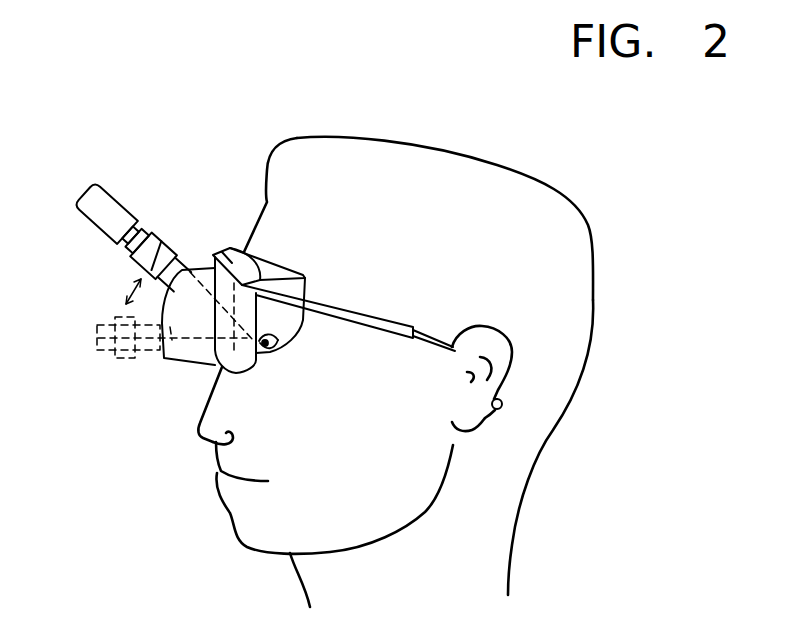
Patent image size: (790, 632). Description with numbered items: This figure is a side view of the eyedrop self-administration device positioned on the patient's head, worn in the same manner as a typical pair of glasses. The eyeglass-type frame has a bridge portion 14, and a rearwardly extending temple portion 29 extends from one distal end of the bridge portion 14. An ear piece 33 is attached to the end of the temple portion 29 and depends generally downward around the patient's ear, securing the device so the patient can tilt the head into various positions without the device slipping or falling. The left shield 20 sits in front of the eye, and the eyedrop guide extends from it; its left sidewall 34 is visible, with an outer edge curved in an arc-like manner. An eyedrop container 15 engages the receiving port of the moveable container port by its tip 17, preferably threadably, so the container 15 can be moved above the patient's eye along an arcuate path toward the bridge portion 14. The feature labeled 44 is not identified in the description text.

The bridge portion 14 is at (215, 249).
The eyedrop container 15 is at (105, 203).
The tip 17 is at (153, 232).
The left shield 20 is at (239, 373).
The temple portion 29 is at (363, 315).
The ear piece 33 is at (502, 406).
The left sidewall 34 is at (213, 330).
The pivoting direction 44 is at (140, 270).